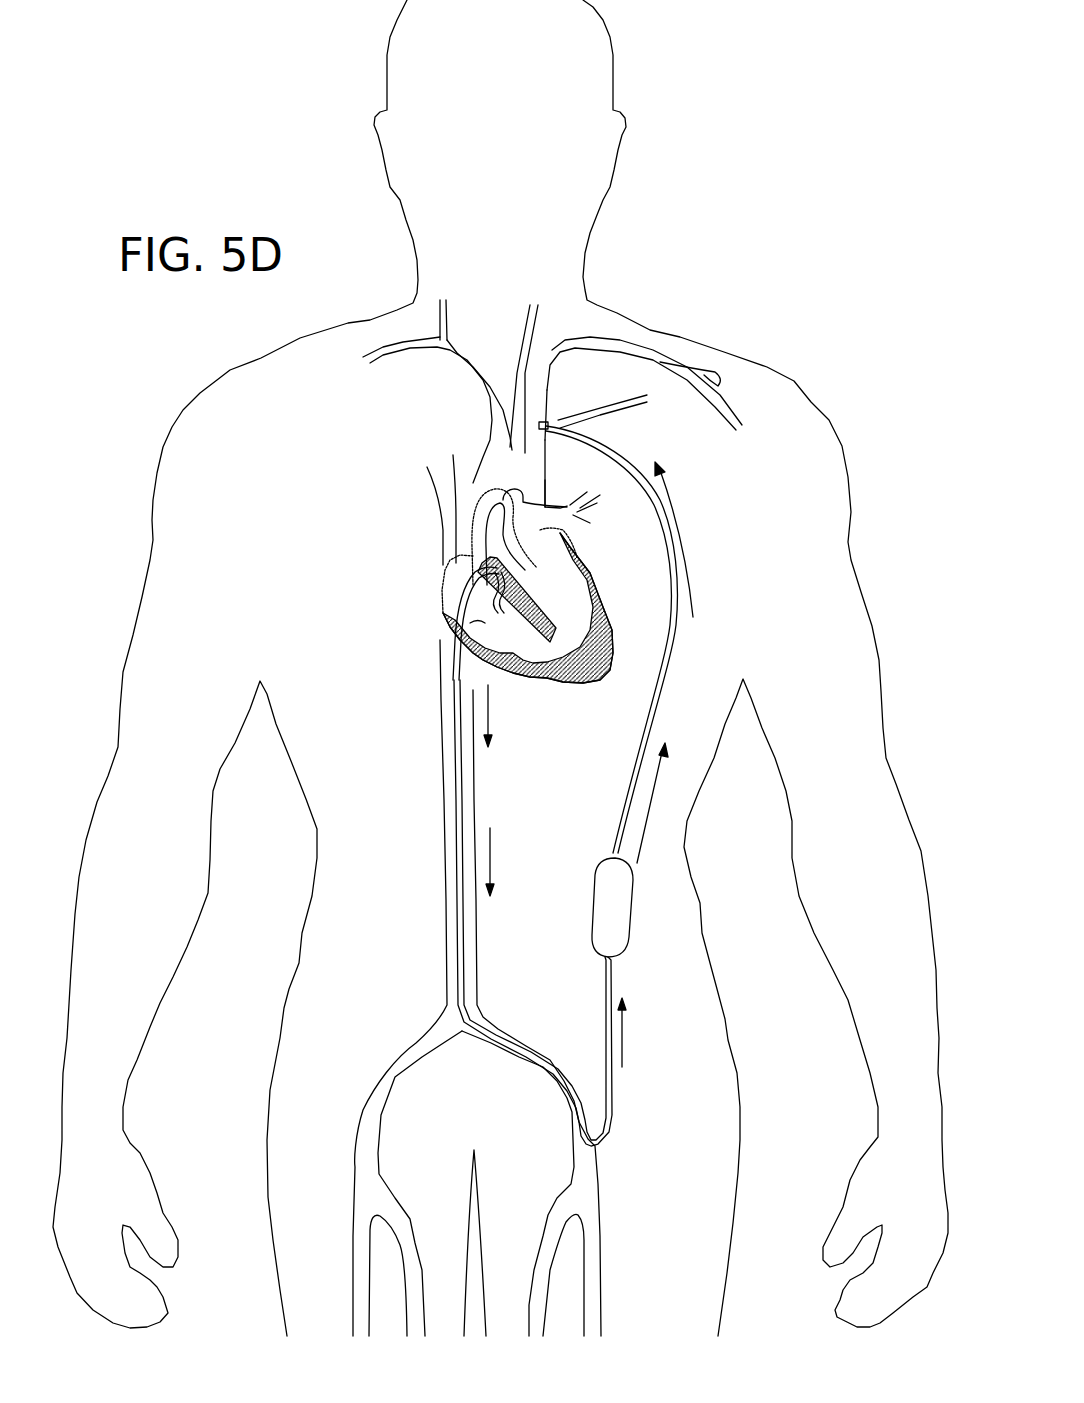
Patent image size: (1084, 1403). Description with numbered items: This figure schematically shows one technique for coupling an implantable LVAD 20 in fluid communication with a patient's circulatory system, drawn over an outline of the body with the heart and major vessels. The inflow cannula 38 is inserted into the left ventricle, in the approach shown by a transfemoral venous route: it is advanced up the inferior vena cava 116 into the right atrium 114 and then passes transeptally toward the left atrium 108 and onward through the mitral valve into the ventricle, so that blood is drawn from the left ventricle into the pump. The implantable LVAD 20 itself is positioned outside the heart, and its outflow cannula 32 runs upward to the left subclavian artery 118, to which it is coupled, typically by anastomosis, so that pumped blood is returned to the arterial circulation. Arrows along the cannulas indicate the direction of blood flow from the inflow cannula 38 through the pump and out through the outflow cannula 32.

The implantable LVAD 20 is at (644, 931).
The outflow cannula 32 is at (633, 463).
The inflow cannula 38 is at (563, 603).
The left atrium 108 is at (557, 547).
The right atrium 114 is at (463, 566).
The inferior vena cava 116 is at (478, 782).
The left subclavian artery 118 is at (575, 422).